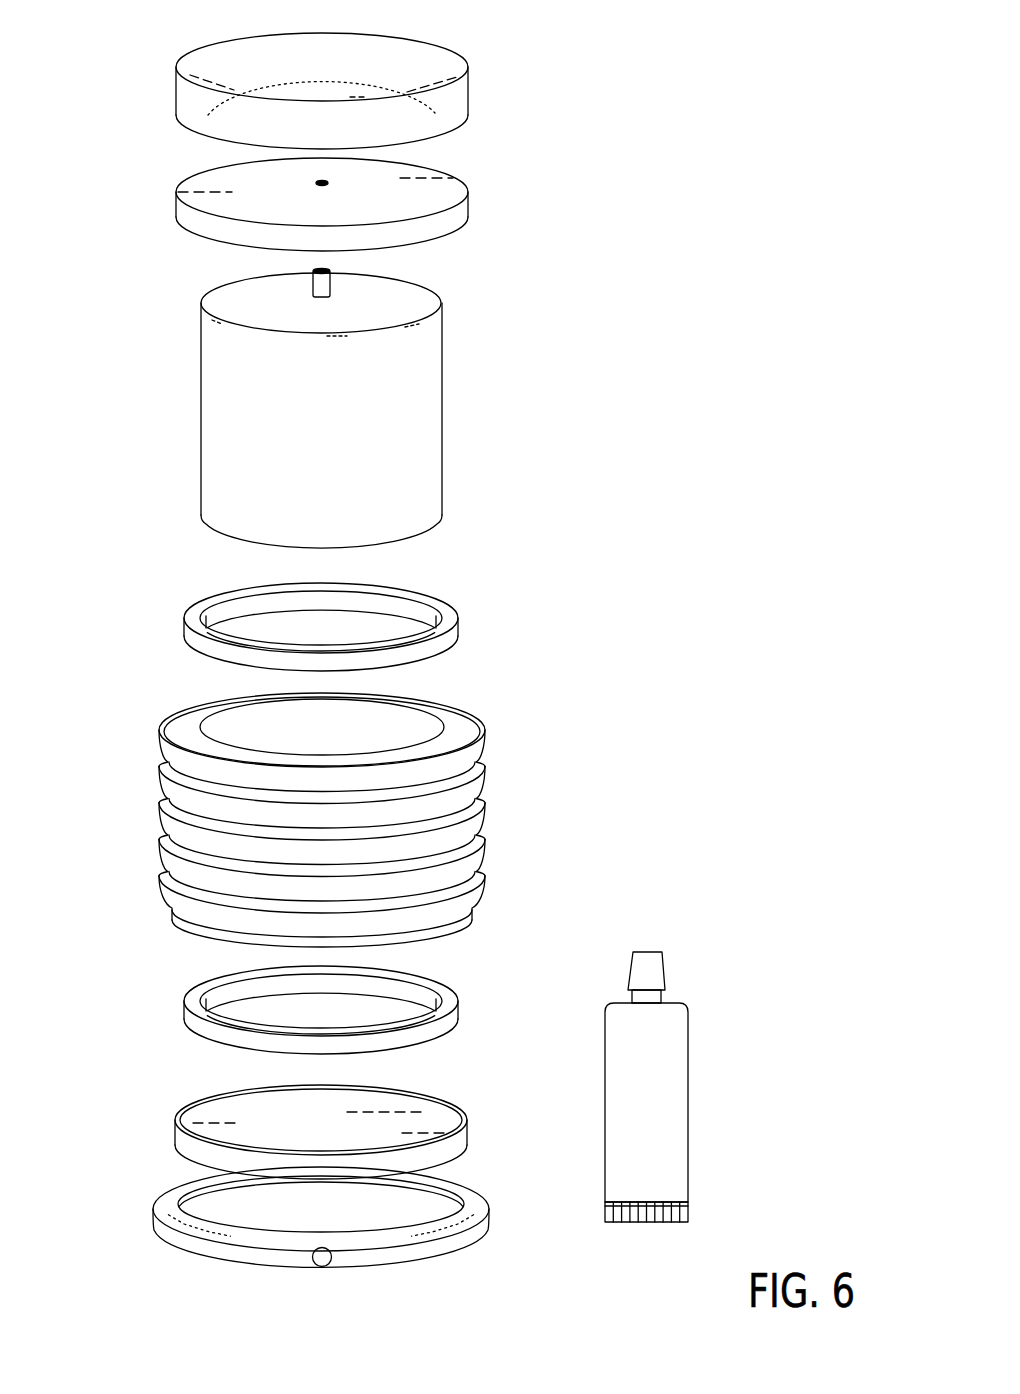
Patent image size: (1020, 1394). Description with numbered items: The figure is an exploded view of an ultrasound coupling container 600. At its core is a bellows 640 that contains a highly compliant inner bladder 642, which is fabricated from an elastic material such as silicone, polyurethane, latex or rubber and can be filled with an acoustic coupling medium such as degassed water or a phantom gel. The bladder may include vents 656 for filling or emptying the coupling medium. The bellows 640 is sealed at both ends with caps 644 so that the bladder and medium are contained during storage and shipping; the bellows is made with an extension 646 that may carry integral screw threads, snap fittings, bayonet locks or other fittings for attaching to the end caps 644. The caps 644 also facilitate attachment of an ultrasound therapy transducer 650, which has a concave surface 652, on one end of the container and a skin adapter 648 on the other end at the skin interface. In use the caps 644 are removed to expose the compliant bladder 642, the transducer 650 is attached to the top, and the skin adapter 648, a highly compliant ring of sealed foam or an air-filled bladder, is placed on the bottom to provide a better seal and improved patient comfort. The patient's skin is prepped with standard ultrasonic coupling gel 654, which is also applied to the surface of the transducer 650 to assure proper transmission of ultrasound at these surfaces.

The ultrasound coupling container 600 is at (706, 30).
The bellows 640 is at (128, 805).
The inner bladder 642 is at (215, 440).
The caps 644 is at (177, 197).
The extension 646 is at (186, 627).
The skin adapter 648 is at (160, 1208).
The ultrasound therapy transducer 650 is at (175, 74).
The concave surface 652 is at (413, 97).
The ultrasonic coupling gel 654 is at (613, 950).
The vents 656 is at (328, 182).